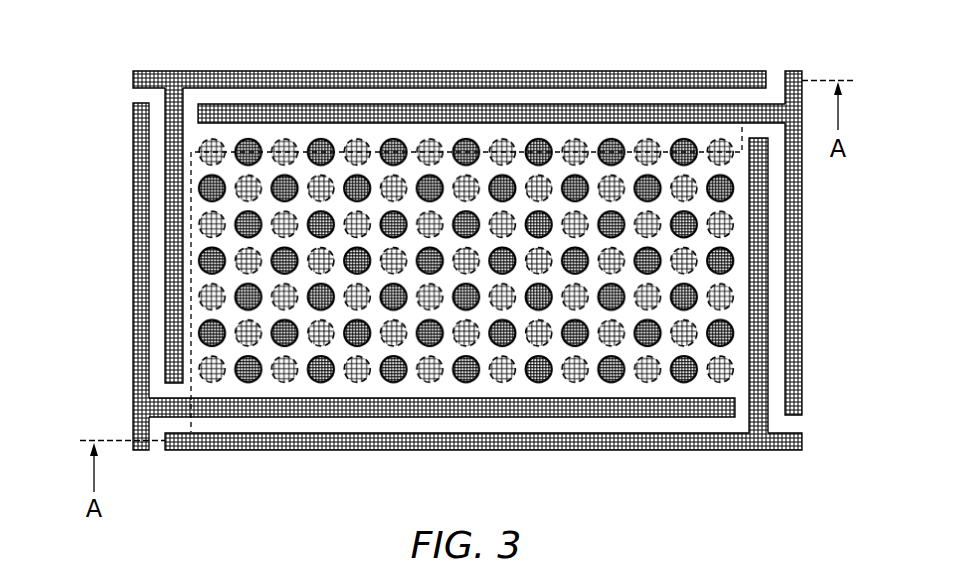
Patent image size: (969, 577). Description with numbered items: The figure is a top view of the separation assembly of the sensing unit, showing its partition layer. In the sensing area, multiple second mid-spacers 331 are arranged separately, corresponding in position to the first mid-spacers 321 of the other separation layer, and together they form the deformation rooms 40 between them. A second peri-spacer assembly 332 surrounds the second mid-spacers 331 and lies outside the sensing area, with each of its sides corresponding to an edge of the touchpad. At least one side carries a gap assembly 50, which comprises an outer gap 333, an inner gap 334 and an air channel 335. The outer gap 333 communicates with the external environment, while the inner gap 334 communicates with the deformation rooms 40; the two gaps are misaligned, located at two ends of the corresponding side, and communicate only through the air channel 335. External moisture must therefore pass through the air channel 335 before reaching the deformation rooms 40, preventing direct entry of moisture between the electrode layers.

The gap assembly 50 is at (445, 228).
The deformation rooms 40 is at (520, 227).
The first mid-spacers 321 is at (718, 150).
The second mid-spacers 331 is at (683, 140).
The second peri-spacer assembly 332 is at (462, 71).
The outer gap 333 is at (778, 72).
The inner gap 334 is at (193, 112).
The air channel 335 is at (341, 104).